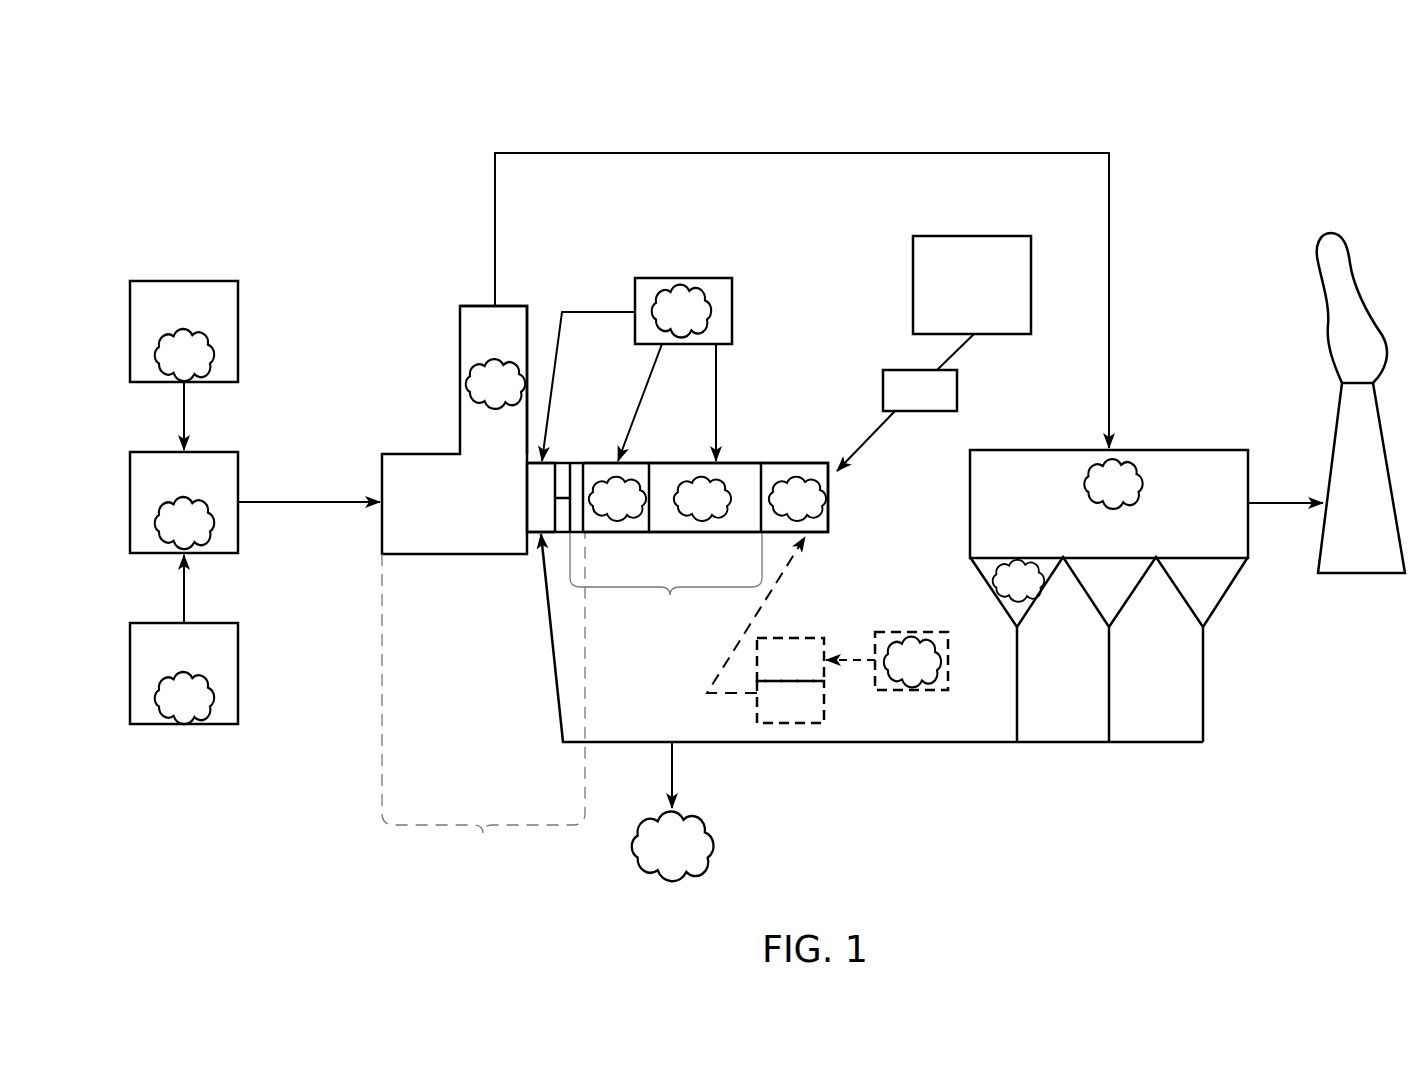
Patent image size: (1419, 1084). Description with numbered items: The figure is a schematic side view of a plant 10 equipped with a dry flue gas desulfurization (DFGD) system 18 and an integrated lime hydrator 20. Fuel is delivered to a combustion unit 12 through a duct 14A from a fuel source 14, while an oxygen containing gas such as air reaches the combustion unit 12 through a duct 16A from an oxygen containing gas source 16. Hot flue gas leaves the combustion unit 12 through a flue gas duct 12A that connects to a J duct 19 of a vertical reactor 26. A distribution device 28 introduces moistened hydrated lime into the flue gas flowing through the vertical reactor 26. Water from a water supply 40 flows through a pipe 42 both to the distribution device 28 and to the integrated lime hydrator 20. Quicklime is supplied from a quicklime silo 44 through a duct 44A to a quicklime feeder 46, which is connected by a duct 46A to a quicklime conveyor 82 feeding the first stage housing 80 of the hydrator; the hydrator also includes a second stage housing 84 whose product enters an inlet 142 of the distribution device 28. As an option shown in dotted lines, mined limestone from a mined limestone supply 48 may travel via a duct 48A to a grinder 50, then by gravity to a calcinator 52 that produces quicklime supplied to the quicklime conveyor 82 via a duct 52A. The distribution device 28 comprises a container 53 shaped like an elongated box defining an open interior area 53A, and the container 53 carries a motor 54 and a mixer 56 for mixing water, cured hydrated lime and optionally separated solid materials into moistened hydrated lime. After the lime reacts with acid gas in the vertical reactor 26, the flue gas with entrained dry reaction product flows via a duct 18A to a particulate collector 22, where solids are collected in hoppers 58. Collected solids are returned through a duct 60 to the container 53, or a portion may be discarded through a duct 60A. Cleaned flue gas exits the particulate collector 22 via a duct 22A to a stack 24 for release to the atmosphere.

The plant 10 is at (1220, 95).
The combustion unit 12 is at (167, 488).
The flue gas duct 12A is at (305, 505).
The fuel source 14 is at (167, 318).
The duct 14A is at (186, 415).
The oxygen containing gas source 16 is at (167, 660).
The duct 16A is at (186, 592).
The DFGD system 18 is at (483, 835).
The duct 18A is at (813, 157).
The J duct 19 is at (457, 556).
The integrated lime hydrator 20 is at (665, 600).
The particulate collector 22 is at (1090, 541).
The duct 22A is at (1290, 500).
The stack 24 is at (1344, 546).
The vertical reactor 26 is at (460, 330).
The distribution device 28 is at (537, 467).
The water supply 40 is at (682, 278).
The pipe 42 is at (600, 312).
The quicklime silo 44 is at (955, 298).
The duct 44A is at (954, 353).
The quicklime feeder 46 is at (903, 404).
The duct 46A is at (870, 445).
The mined limestone supply 48 is at (948, 672).
The duct 48A is at (847, 660).
The grinder 50 is at (774, 675).
The calcinator 52 is at (774, 715).
The duct 52A is at (705, 688).
The container 53 is at (537, 520).
The open interior area 53A is at (537, 480).
The motor 54 is at (560, 472).
The mixer 56 is at (577, 534).
The hoppers 58 is at (1040, 597).
The duct 60 is at (892, 745).
The duct 60A is at (675, 770).
The first stage housing 80 is at (753, 463).
The quicklime conveyor 82 is at (805, 463).
The second stage housing 84 is at (633, 463).
The inlet 142 is at (587, 524).